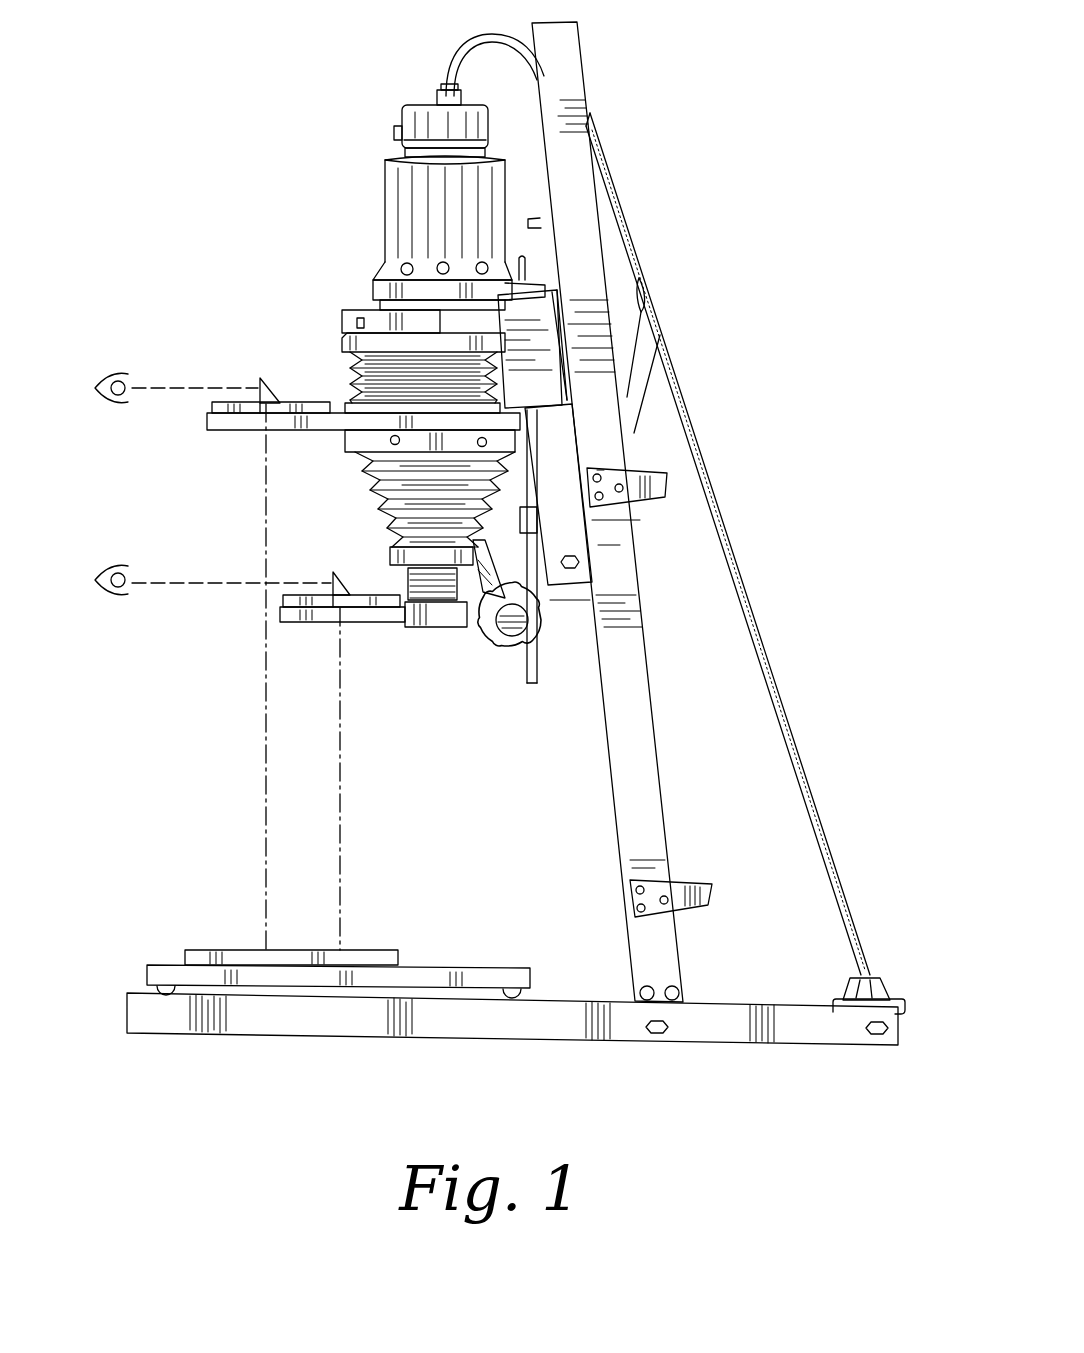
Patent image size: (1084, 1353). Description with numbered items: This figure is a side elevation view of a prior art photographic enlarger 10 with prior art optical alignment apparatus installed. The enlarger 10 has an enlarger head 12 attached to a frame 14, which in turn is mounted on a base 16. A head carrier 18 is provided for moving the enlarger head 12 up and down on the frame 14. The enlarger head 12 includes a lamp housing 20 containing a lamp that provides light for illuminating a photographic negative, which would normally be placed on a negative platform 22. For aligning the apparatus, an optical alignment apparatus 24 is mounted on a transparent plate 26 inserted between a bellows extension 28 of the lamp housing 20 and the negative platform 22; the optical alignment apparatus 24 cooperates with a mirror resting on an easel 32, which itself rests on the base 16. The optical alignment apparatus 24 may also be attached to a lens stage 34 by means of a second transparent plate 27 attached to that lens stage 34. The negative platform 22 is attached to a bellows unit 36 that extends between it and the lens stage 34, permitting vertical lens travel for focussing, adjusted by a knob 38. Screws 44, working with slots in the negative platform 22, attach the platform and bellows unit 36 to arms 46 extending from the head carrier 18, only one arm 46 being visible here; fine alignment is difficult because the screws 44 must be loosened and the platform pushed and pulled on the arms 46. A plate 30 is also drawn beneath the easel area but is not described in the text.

The enlarger 10 is at (686, 202).
The enlarger head 12 is at (364, 280).
The frame 14 is at (650, 645).
The base 16 is at (792, 998).
The head carrier 18 is at (553, 462).
The lamp housing 20 is at (379, 193).
The negative platform 22 is at (426, 432).
The optical alignment apparatus 24 is at (248, 382).
The transparent plate 26 is at (241, 421).
The transparent plate 27 is at (390, 623).
The bellows extension 28 is at (348, 385).
The workpiece plate 30 is at (218, 950).
The easel 32 is at (148, 975).
The lens stage 34 is at (446, 629).
The bellows unit 36 is at (391, 527).
The knob 38 is at (540, 636).
The screws 44 is at (393, 441).
The arms 46 is at (428, 438).